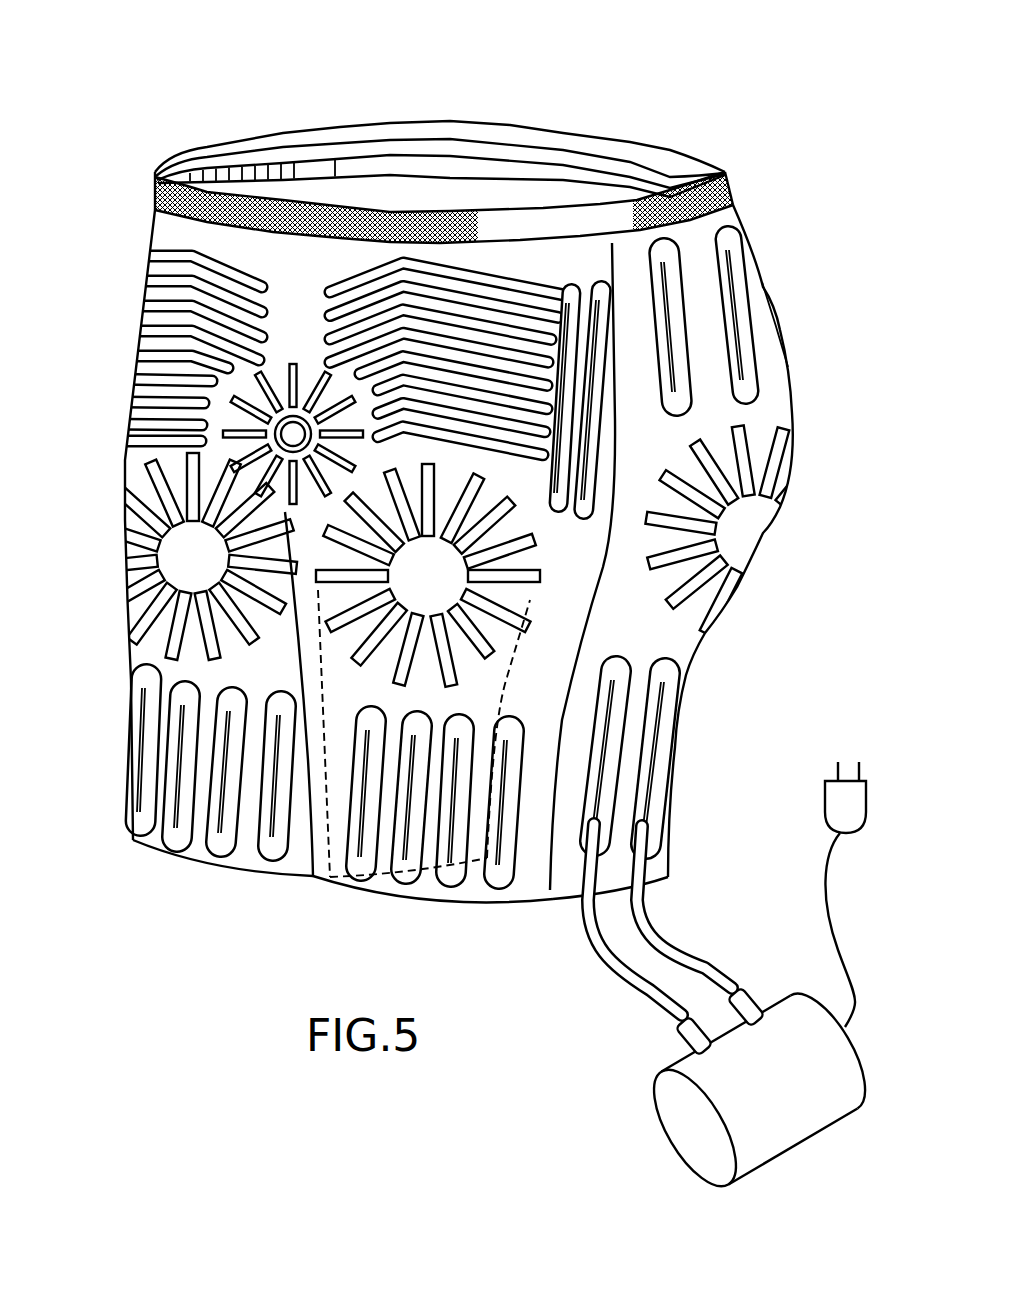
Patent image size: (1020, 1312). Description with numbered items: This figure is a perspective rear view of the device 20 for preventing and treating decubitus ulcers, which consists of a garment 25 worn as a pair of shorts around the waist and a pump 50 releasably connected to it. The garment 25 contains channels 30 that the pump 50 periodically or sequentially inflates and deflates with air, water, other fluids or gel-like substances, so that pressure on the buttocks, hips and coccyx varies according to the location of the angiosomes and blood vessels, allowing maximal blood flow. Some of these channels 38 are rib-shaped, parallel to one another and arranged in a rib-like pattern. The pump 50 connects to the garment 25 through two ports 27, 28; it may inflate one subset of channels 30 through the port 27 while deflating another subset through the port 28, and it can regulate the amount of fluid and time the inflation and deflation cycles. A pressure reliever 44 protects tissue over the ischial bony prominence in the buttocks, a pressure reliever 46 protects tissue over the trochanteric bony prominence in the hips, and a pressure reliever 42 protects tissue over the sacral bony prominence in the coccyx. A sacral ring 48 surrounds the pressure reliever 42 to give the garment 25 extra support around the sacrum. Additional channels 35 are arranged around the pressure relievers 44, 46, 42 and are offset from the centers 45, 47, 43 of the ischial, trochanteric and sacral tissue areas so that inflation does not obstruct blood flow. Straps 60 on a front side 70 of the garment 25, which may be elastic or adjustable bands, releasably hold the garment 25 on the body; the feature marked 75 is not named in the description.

The device 20 is at (207, 915).
The garment 25 is at (733, 218).
The port 27 is at (682, 1027).
The port 28 is at (741, 994).
The channels 30 is at (537, 333).
The channels 35 is at (140, 355).
The channels 38 is at (167, 302).
The pressure reliever 42 is at (296, 430).
The center 43 is at (287, 436).
The pressure reliever 44 is at (178, 538).
The center 45 is at (187, 558).
The pressure reliever 46 is at (748, 537).
The center 47 is at (753, 547).
The sacral ring 48 is at (292, 433).
The pump 50 is at (779, 1118).
The straps 60 is at (415, 193).
The front side 70 is at (450, 152).
The seam 75 is at (297, 290).